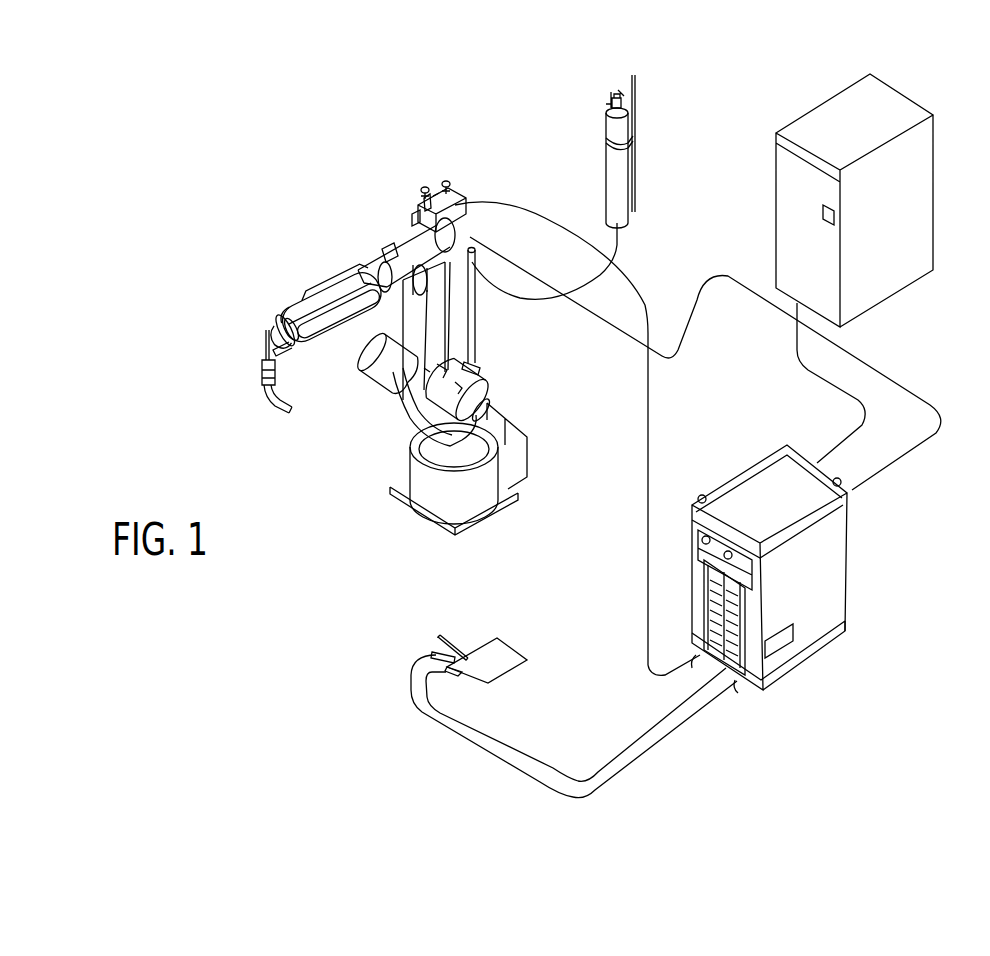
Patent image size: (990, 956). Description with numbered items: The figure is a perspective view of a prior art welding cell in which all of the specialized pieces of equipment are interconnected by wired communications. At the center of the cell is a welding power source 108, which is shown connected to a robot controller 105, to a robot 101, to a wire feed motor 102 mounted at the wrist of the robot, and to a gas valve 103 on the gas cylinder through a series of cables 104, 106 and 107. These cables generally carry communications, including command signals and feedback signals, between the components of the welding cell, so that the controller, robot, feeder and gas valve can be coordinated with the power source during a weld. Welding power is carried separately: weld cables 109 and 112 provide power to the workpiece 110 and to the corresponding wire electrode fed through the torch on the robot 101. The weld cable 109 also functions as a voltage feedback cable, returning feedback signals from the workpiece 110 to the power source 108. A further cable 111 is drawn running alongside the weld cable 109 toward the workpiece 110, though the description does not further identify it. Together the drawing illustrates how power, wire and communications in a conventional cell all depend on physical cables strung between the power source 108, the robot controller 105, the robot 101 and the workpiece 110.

The robot 101 is at (332, 280).
The wire feed motor 102 is at (422, 203).
The gas valve 103 is at (605, 149).
The cable 104 is at (617, 250).
The robot controller 105 is at (776, 203).
The cable 106 is at (830, 380).
The cable 107 is at (885, 370).
The welding power source 108 is at (822, 568).
The weld cable 109 is at (678, 737).
The workpiece 110 is at (510, 645).
The sense lead cable 111 is at (488, 742).
The weld cable 112 is at (648, 458).